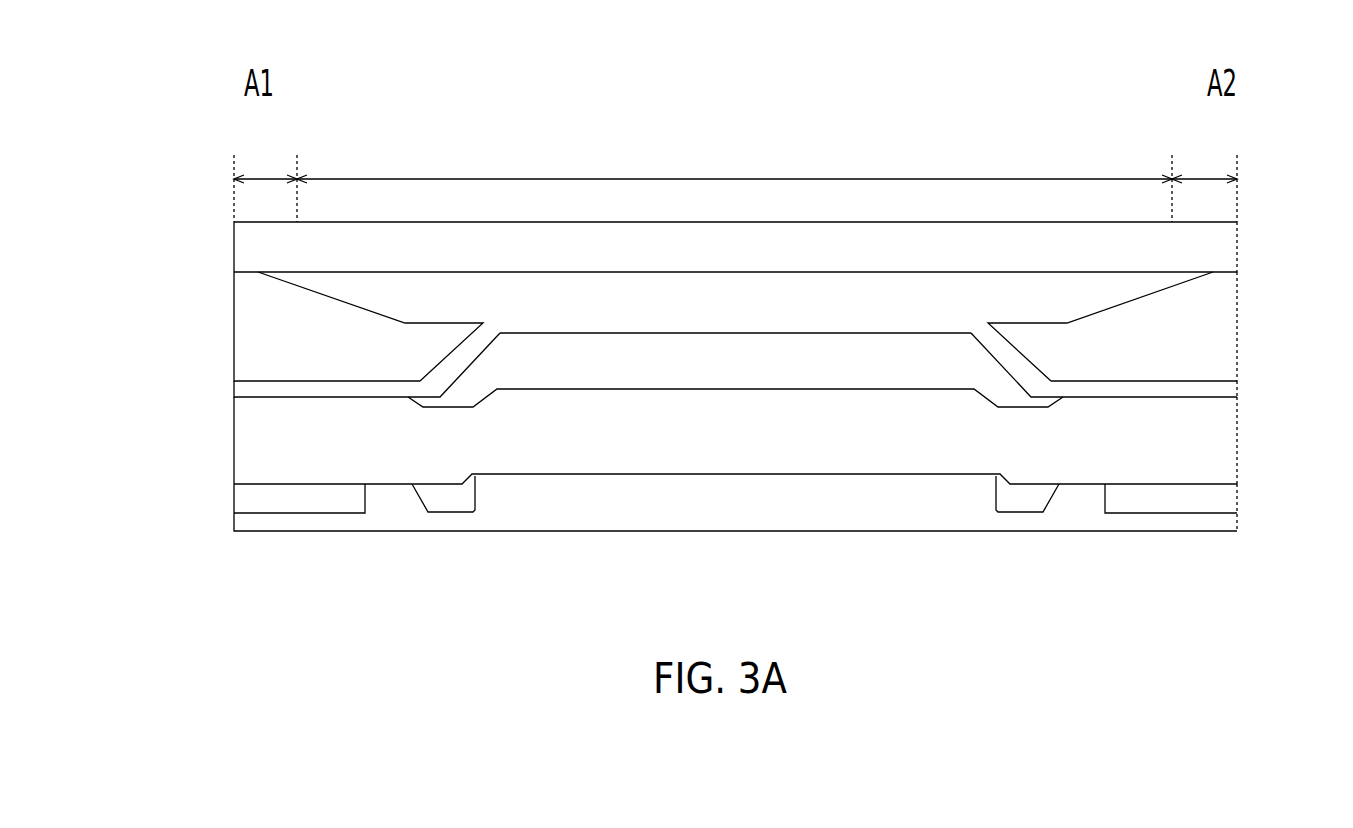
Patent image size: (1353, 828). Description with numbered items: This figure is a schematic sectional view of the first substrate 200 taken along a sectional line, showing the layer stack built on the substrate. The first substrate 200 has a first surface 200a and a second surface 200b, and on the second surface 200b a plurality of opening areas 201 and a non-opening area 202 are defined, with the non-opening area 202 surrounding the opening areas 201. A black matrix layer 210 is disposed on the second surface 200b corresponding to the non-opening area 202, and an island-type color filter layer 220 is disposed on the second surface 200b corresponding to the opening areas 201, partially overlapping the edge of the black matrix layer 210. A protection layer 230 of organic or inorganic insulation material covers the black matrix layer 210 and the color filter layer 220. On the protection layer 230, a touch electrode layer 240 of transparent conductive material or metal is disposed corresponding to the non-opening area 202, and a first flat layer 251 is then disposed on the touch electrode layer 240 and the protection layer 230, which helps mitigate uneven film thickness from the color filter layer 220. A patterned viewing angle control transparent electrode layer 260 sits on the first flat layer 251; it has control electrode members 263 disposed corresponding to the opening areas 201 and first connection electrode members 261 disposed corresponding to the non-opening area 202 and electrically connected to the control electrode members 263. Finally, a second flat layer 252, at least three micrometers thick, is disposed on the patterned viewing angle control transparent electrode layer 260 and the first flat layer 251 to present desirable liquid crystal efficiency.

The first substrate 200 is at (710, 263).
The first surface 200a is at (1082, 221).
The second surface 200b is at (1083, 273).
The opening areas 201 is at (735, 172).
The non-opening area 202 is at (734, 157).
The black matrix layer 210 is at (710, 315).
The color filter layer 220 is at (288, 358).
The protection layer 230 is at (255, 389).
The touch electrode layer 240 is at (710, 373).
The first flat layer 251 is at (710, 457).
The second flat layer 252 is at (710, 520).
The patterned viewing angle control transparent electrode layer 260 is at (723, 541).
The first connection electrode members 261 is at (450, 500).
The control electrode members 263 is at (243, 497).